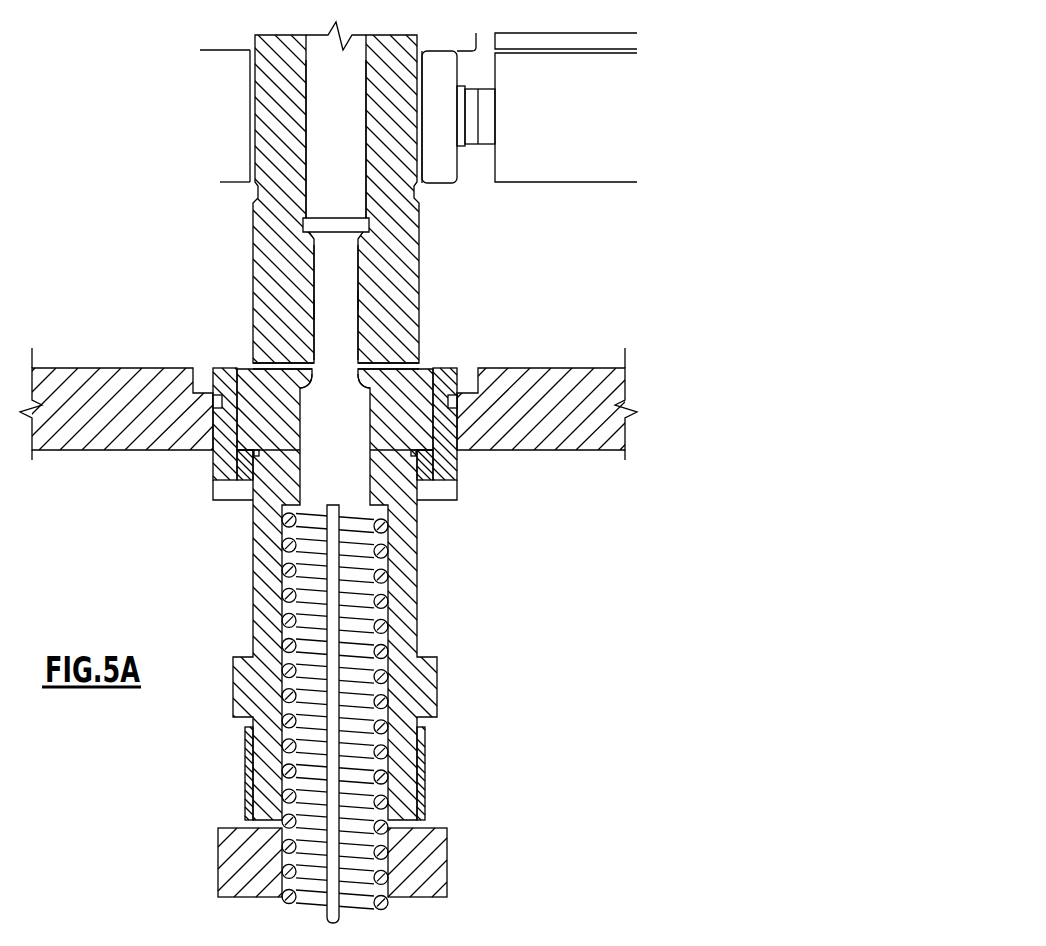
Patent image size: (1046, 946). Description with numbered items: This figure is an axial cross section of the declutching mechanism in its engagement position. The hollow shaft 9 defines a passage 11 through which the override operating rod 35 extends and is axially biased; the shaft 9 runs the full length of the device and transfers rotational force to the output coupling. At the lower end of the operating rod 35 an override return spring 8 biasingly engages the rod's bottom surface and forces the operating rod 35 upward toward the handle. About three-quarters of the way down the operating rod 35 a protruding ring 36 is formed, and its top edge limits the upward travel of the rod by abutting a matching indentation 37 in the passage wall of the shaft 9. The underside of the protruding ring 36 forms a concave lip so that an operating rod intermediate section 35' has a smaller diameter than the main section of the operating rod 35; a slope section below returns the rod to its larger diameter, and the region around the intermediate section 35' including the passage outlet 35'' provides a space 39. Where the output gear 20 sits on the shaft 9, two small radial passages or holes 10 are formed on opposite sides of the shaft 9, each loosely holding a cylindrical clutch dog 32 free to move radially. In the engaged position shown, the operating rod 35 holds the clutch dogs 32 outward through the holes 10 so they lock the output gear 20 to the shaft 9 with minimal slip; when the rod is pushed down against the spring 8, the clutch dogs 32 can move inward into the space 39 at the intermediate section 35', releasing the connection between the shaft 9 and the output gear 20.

The override return spring 8 is at (383, 600).
The shaft 9 is at (272, 103).
The radial passages or holes 10 is at (286, 358).
The passage 11 is at (305, 120).
The output gear 20 is at (165, 424).
The cylindrical clutch dogs 32 is at (382, 428).
The operating rod 35 is at (353, 25).
The operating rod intermediate section 35' is at (282, 302).
The passage outlet 35'' is at (397, 369).
The protruding ring 36 is at (358, 223).
The indentation 37 is at (372, 214).
The space 39 is at (372, 300).